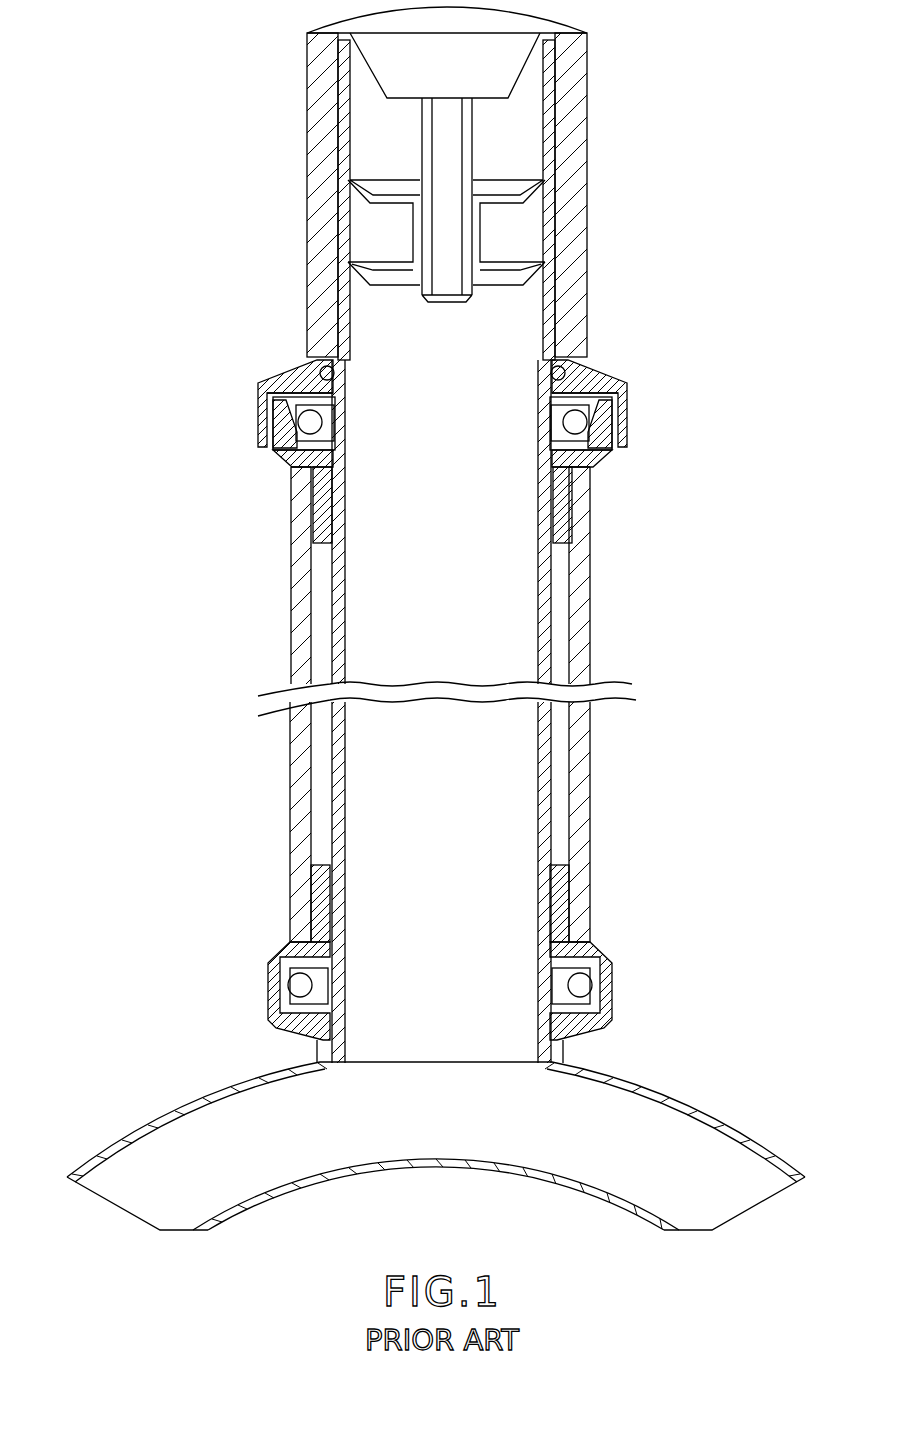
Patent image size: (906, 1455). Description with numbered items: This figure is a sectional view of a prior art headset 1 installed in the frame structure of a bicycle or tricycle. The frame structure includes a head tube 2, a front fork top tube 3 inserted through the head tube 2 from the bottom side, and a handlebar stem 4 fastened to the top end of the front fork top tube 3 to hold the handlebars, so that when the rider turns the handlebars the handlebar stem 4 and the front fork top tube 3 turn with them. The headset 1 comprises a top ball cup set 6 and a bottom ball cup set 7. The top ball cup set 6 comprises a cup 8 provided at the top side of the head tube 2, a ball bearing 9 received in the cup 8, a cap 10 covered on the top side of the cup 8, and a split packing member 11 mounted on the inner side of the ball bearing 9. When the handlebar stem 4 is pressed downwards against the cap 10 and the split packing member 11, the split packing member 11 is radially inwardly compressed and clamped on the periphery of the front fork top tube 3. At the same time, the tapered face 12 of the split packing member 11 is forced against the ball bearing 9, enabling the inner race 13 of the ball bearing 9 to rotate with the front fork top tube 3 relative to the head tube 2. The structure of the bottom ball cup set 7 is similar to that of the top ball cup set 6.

The headset 1 is at (700, 378).
The head tube 2 is at (587, 640).
The front fork top tube 3 is at (550, 592).
The handlebar stem 4 is at (585, 96).
The top ball cup set 6 is at (600, 372).
The bottom ball cup set 7 is at (606, 994).
The cup 8 is at (607, 455).
The ball bearing 9 is at (583, 426).
The cap 10 is at (589, 366).
The split packing member 11 is at (600, 380).
The tapered face 12 is at (570, 472).
The inner race 13 is at (590, 390).